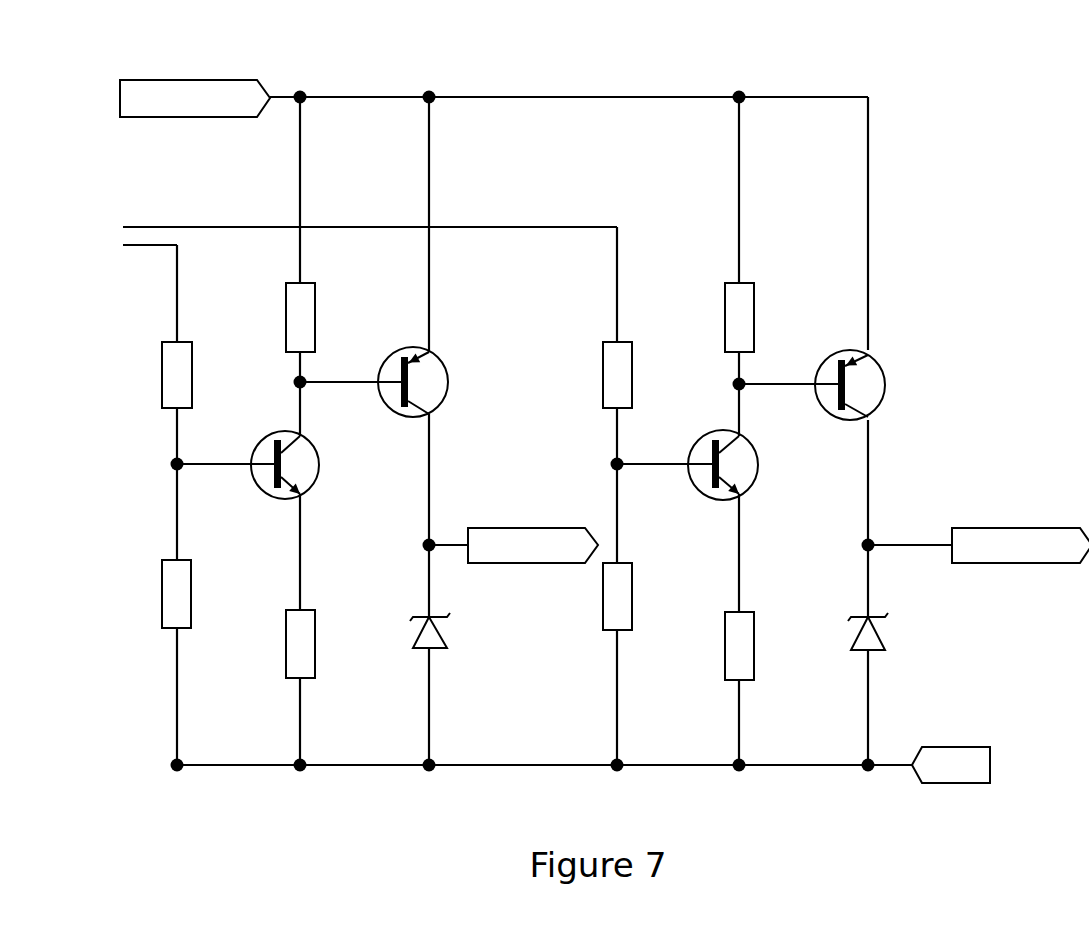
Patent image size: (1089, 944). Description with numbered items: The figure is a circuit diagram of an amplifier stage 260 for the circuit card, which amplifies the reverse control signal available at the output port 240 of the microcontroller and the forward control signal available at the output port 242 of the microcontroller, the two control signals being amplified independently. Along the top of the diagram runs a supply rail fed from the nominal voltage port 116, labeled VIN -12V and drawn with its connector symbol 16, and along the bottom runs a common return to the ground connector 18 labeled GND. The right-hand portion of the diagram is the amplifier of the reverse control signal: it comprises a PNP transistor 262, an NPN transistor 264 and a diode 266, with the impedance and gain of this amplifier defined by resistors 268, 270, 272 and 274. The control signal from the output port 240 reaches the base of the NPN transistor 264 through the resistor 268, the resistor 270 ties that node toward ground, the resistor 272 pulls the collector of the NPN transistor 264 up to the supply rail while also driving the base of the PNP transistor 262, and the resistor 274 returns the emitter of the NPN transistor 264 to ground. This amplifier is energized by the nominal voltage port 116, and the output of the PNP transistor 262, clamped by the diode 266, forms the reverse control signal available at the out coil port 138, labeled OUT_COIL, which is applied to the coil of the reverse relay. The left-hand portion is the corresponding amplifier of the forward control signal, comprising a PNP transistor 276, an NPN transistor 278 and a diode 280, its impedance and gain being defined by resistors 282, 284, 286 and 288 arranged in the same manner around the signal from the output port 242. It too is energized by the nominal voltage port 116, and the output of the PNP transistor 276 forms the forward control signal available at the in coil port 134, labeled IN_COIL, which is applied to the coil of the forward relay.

The VIN -12V power input 16 is at (120, 90).
The nominal voltage port 116 is at (226, 80).
The ground GND 18 is at (893, 762).
The in coil port 134 is at (498, 528).
The out coil port 138 is at (1065, 528).
The output port 240 is at (128, 227).
The output port 242 is at (131, 245).
The amplifier stage 260 is at (1018, 122).
The PNP transistor 262 is at (829, 353).
The NPN transistor 264 is at (699, 438).
The diode 266 is at (850, 643).
The resistor 268 is at (603, 370).
The resistor 270 is at (603, 616).
The resistor 272 is at (725, 295).
The resistor 274 is at (725, 635).
The PNP transistor 276 is at (389, 353).
The NPN transistor 278 is at (260, 438).
The diode 280 is at (414, 642).
The resistor 282 is at (162, 370).
The resistor 284 is at (162, 576).
The resistor 286 is at (286, 301).
The resistor 288 is at (286, 631).